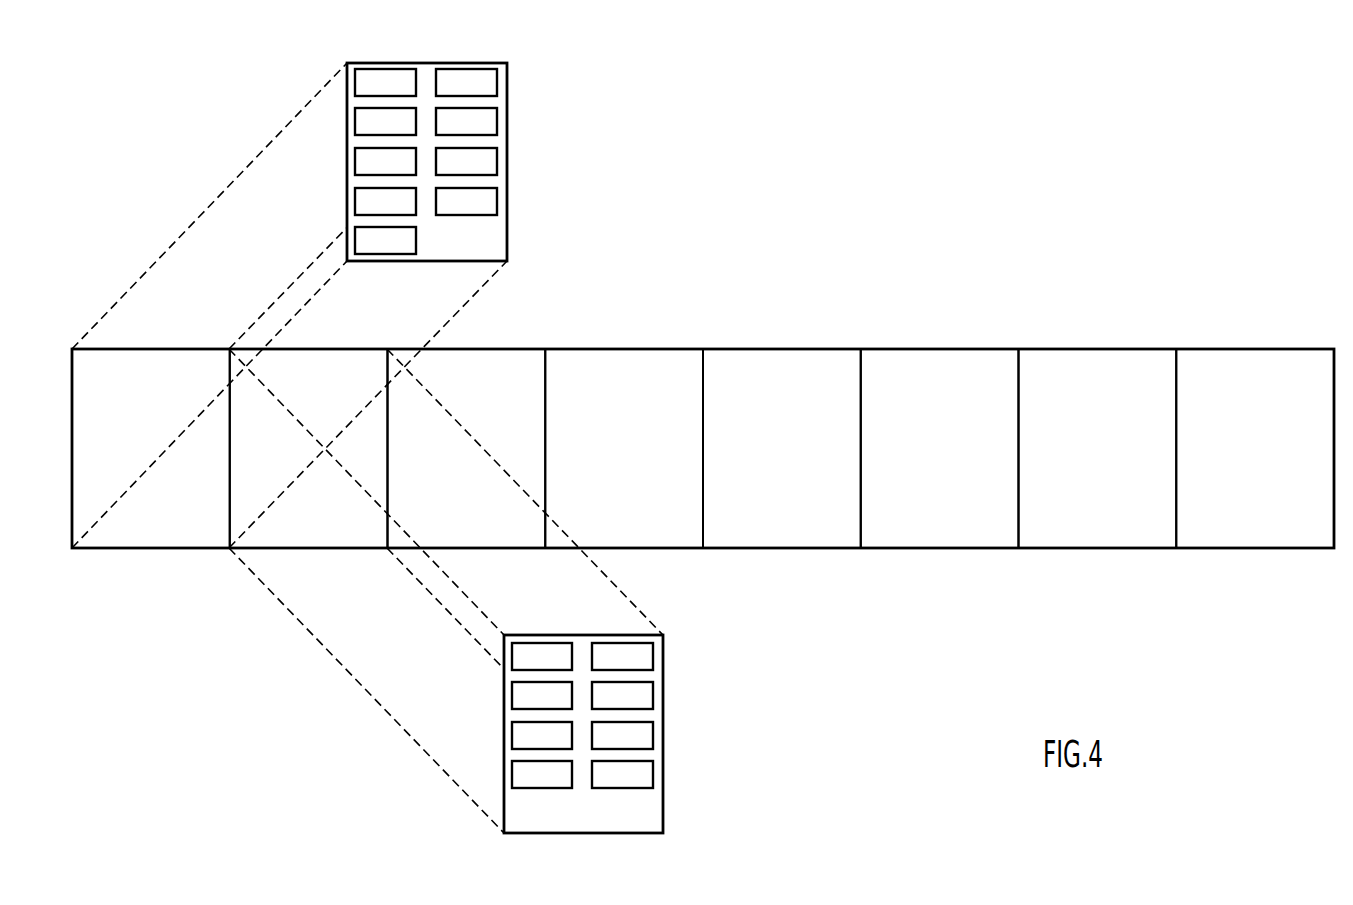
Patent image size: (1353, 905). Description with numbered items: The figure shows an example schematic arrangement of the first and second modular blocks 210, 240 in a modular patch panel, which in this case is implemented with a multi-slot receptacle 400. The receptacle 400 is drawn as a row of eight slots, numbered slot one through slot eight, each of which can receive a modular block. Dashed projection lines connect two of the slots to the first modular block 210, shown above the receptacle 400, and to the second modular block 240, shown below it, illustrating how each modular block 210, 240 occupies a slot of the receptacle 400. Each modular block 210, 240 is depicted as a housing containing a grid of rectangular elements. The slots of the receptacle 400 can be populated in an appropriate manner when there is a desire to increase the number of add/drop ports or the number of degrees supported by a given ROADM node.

The multi-slot receptacle 400 is at (783, 572).
The first modular block 210 is at (507, 172).
The second modular block 240 is at (663, 699).